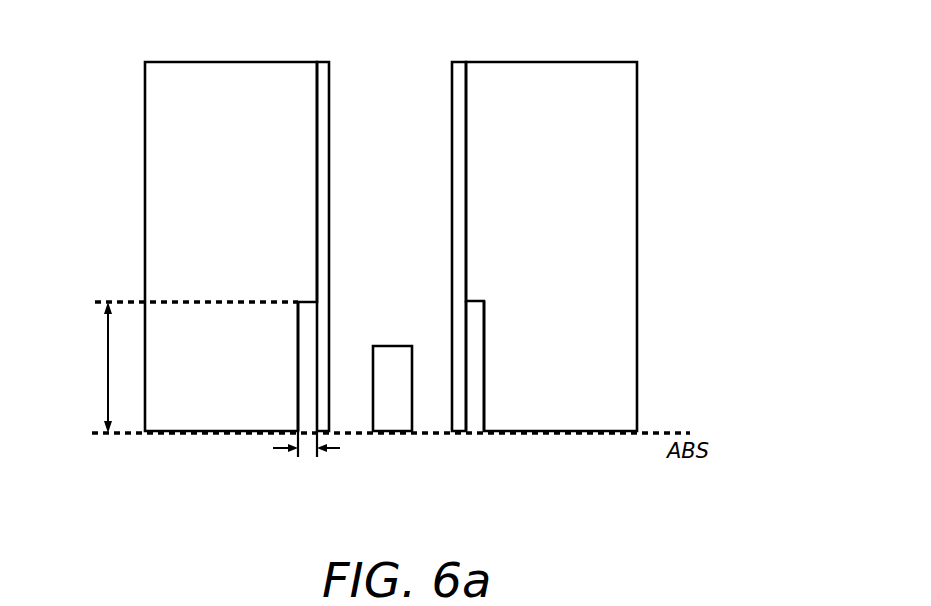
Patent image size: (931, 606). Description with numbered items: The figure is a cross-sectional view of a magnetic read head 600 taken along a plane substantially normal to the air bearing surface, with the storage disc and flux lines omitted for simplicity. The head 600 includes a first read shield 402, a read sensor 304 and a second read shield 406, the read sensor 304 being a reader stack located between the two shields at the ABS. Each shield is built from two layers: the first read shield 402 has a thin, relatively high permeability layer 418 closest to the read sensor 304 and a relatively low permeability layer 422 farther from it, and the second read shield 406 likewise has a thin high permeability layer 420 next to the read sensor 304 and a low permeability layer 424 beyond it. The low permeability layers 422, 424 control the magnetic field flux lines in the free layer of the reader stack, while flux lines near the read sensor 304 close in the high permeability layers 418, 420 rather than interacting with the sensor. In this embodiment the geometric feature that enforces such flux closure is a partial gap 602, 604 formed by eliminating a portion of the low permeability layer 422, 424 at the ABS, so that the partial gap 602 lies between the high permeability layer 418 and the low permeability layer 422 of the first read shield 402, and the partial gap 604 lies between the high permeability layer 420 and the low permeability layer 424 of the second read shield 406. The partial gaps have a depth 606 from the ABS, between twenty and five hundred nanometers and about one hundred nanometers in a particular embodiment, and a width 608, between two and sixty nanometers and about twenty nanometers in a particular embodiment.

The first read shield 402 is at (331, 57).
The second read shield 406 is at (639, 57).
The thin high permeability layer 418 is at (320, 78).
The thin high permeability layer 420 is at (457, 70).
The low permeability layer 422 is at (248, 228).
The low permeability layer 424 is at (575, 228).
The read sensor 304 is at (392, 346).
The head 600 is at (680, 224).
The partial gap 602 is at (308, 410).
The partial gap 604 is at (472, 410).
The depth of partial gap 606 is at (98, 361).
The width of partial gap 608 is at (320, 466).